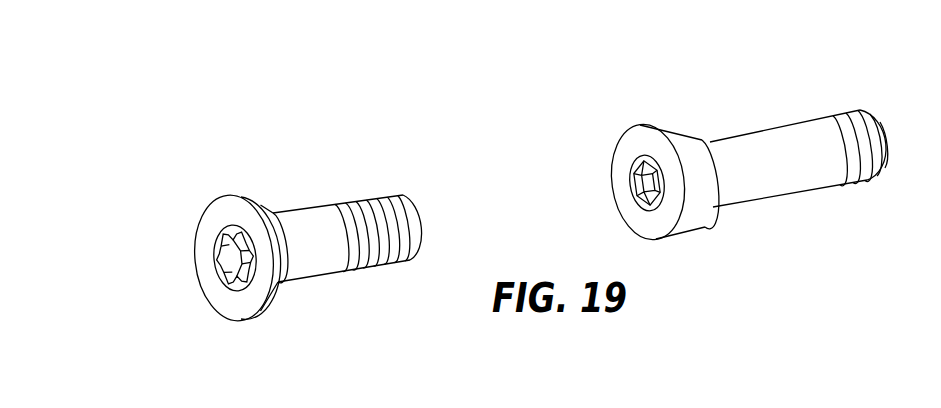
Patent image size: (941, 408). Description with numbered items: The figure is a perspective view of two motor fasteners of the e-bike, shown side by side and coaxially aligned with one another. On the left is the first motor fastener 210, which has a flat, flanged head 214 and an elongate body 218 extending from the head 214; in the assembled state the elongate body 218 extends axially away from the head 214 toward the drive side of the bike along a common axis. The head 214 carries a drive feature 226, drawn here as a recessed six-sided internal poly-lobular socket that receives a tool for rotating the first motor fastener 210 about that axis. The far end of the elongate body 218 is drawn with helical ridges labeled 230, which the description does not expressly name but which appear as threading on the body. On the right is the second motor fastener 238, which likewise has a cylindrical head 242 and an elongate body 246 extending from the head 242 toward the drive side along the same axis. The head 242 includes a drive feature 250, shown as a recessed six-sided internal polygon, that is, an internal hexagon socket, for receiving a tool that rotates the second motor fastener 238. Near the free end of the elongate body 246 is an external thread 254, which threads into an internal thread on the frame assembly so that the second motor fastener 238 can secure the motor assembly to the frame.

The first motor fastener 210 is at (285, 177).
The head 214 is at (223, 213).
The elongate body 218 is at (337, 217).
The drive feature 226 is at (220, 257).
The threads 230 is at (392, 200).
The second motor fastener 238 is at (637, 110).
The head 242 is at (630, 155).
The elongate body 246 is at (770, 140).
The drive feature 250 is at (630, 182).
The external thread 254 is at (858, 117).